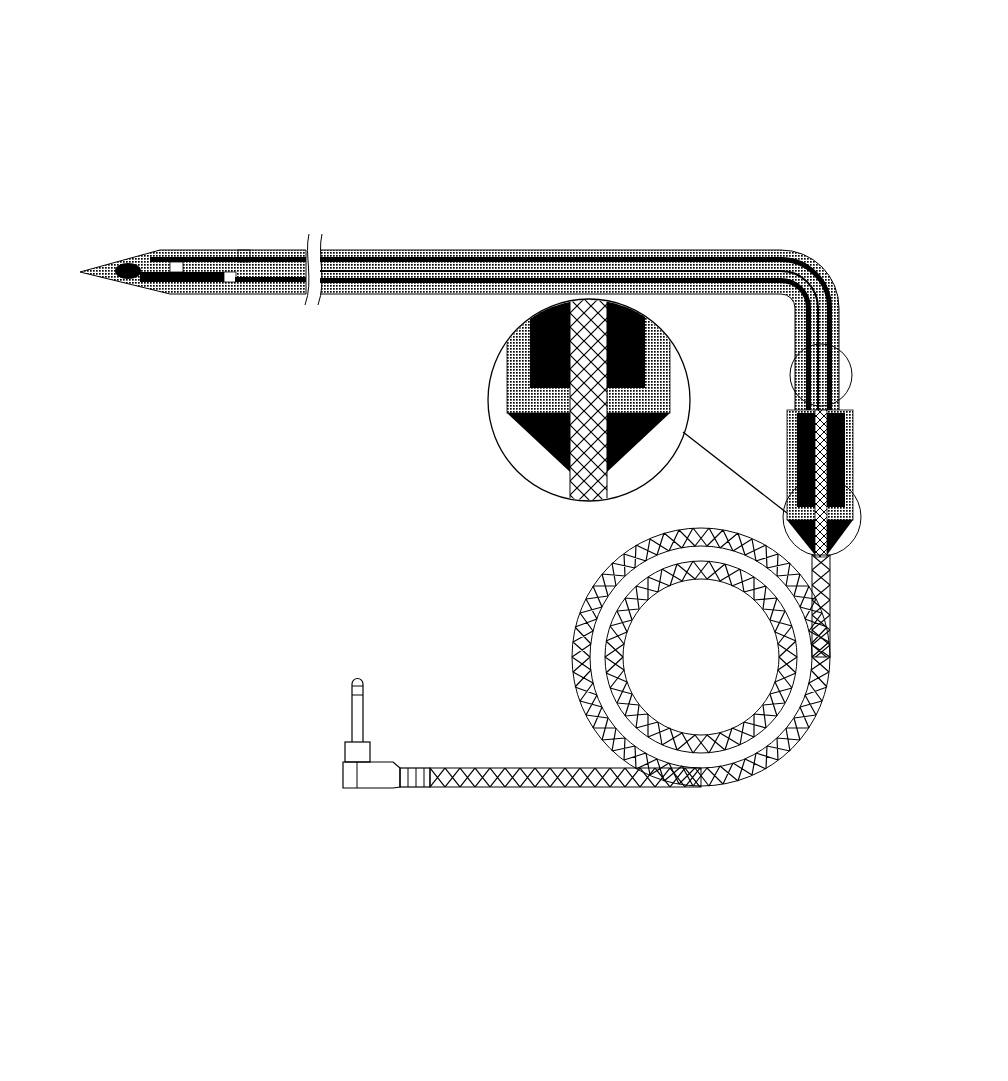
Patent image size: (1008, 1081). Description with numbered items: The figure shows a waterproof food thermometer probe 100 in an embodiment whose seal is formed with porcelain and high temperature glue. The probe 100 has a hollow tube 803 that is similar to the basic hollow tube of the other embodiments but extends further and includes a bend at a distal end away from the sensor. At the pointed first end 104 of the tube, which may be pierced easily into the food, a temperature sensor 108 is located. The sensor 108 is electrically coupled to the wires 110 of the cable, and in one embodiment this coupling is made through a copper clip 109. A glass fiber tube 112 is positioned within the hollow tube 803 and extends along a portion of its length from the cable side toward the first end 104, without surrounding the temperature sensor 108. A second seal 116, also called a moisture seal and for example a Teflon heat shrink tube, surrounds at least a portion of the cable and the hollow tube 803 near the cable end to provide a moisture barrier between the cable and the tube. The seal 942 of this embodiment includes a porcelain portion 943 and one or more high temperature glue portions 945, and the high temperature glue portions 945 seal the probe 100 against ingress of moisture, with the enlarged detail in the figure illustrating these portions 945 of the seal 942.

The probe 100 is at (100, 38).
The first end 104 is at (81, 273).
The temperature sensor 108 is at (128, 262).
The copper clip 109 is at (213, 251).
The hollow tube 803 is at (243, 251).
The glass fiber tube 112 is at (347, 251).
The second seal 116 is at (690, 251).
The wires 110 is at (787, 513).
The seal 942 is at (895, 422).
The porcelain portion 943 is at (853, 445).
The high temperature glue portions 945 is at (795, 407).